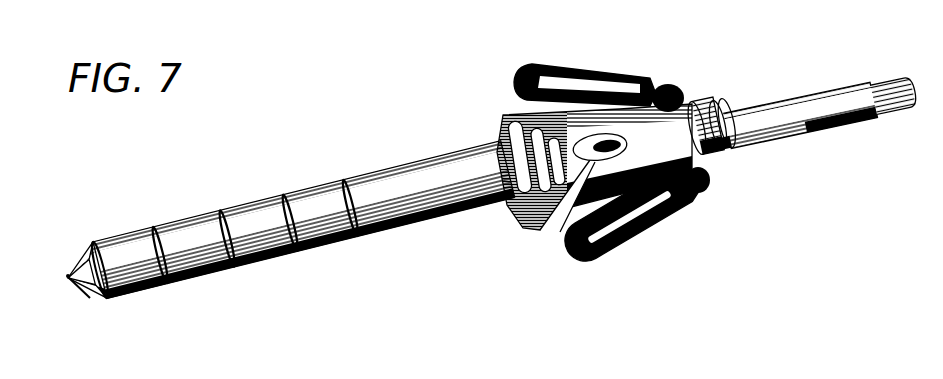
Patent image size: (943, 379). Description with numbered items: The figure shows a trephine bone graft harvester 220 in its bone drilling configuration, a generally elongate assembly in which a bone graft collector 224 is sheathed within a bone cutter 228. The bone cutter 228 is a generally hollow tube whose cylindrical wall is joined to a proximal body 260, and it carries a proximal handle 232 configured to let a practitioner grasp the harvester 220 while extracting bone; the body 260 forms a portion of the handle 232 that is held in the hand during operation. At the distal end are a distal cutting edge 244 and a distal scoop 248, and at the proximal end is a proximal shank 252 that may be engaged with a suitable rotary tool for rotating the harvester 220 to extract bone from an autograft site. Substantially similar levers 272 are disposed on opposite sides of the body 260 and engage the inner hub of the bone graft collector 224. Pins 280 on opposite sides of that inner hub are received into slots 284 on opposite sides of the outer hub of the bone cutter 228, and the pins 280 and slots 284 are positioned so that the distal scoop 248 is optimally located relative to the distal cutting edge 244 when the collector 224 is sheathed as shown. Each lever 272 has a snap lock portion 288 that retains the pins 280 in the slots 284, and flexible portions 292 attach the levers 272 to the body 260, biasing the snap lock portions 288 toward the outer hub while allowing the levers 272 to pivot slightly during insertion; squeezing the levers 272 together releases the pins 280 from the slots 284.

The trephine bone graft harvester 220 is at (395, 76).
The bone graft collector 224 is at (78, 262).
The bone cutter 228 is at (265, 243).
The proximal handle 232 is at (668, 249).
The distal cutting edge 244 is at (73, 287).
The distal scoop 248 is at (70, 266).
The proximal shank 252 is at (824, 118).
The proximal body 260 is at (590, 163).
The levers 272 is at (567, 86).
The pins 280 is at (662, 87).
The slots 284 is at (720, 156).
The snap lock portion 288 is at (692, 100).
The flexible portions 292 is at (648, 94).